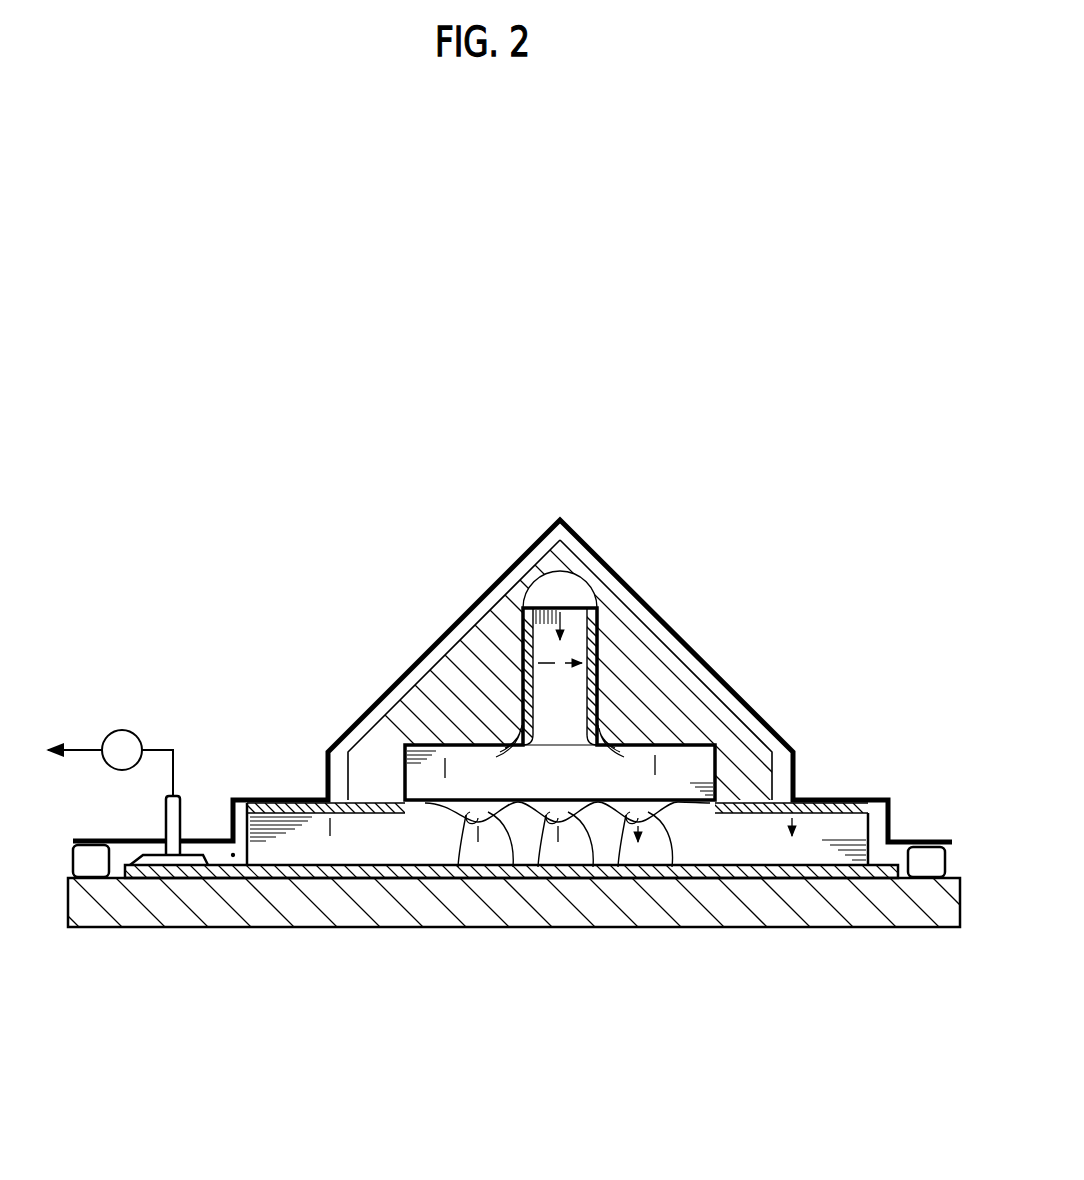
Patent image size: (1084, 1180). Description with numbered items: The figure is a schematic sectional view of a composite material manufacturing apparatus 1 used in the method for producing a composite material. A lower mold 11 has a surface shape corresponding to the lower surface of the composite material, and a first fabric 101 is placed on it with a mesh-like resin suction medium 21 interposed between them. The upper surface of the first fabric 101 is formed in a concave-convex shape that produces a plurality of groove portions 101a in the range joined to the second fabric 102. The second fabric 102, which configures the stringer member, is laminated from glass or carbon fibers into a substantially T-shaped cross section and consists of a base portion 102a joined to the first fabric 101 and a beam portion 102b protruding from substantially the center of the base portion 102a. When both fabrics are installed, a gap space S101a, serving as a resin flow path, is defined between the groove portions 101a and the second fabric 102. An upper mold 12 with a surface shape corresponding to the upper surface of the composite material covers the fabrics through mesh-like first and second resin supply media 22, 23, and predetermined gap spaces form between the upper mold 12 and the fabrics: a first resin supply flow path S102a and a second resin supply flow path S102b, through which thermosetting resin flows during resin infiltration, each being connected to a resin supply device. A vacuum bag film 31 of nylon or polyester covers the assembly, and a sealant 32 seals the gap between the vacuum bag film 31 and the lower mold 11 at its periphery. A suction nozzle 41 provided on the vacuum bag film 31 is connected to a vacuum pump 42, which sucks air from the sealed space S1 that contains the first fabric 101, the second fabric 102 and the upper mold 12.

The composite material manufacturing apparatus 1 is at (291, 515).
The lower mold 11 is at (698, 908).
The upper mold 12 is at (455, 673).
The resin suction medium 21 is at (723, 880).
The first resin supply medium 22 is at (302, 797).
The second resin supply medium 23 is at (518, 638).
The vacuum bag film 31 is at (399, 678).
The sealant 32 is at (92, 860).
The suction nozzle 41 is at (178, 812).
The vacuum pump 42 is at (120, 728).
The first fabric 101 is at (838, 828).
The groove portion 101a is at (458, 867).
The second fabric 102 is at (781, 627).
The base portion 102a is at (688, 763).
The beam portion 102b is at (577, 693).
The sealed space S1 is at (233, 856).
The gap space (resin flow path) S101a is at (513, 867).
The first resin supply flow path S102a is at (787, 701).
The second resin supply flow path S102b is at (558, 593).